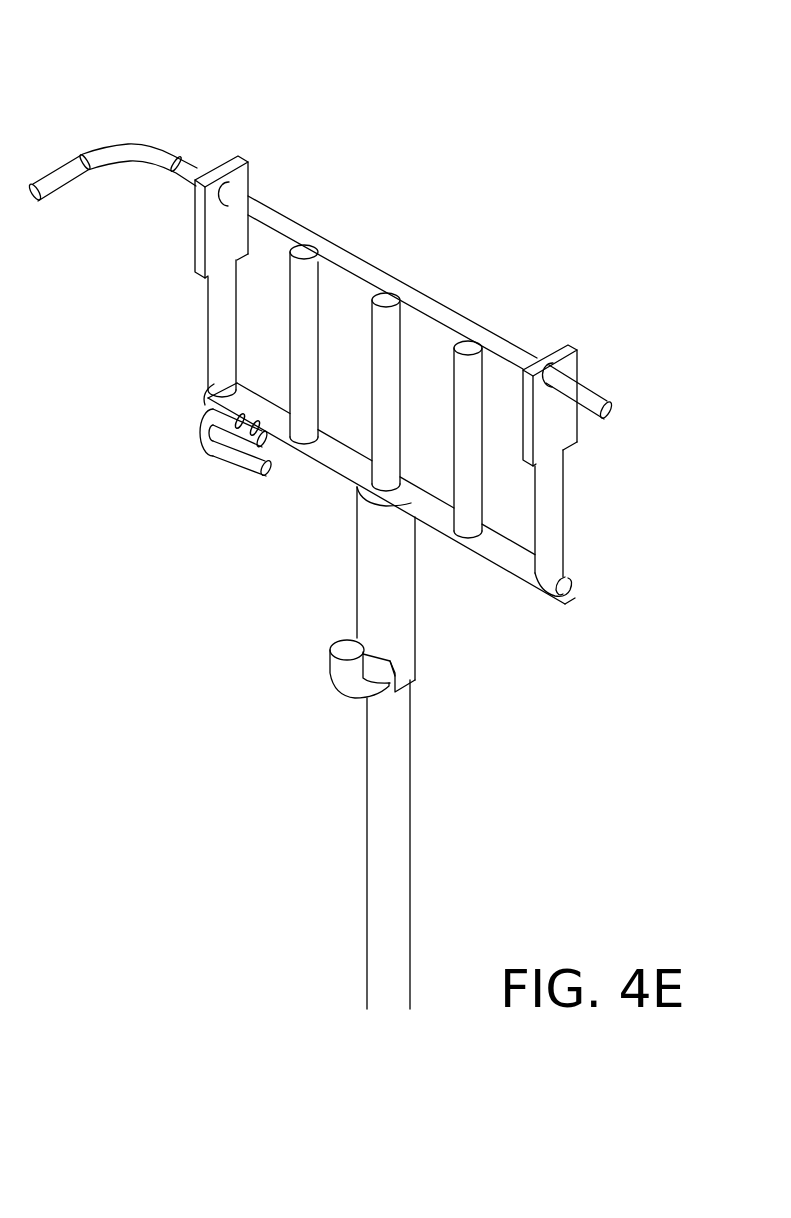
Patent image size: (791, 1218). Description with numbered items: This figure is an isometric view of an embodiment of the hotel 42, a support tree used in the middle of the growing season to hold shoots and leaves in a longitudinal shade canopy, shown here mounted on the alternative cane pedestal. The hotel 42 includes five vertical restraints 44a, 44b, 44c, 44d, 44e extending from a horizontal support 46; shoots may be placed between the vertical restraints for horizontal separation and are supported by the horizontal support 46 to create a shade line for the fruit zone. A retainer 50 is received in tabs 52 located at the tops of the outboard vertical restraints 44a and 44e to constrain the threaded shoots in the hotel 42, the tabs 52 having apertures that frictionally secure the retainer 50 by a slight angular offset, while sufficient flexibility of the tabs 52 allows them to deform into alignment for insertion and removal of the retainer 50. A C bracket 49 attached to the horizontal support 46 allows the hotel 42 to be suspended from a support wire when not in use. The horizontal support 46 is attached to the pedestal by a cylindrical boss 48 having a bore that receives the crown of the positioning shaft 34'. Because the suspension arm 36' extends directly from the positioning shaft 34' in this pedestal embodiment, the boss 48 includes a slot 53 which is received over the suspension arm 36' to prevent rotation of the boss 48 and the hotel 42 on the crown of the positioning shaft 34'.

The positioning shaft 34' is at (302, 844).
The suspension arm 36' is at (281, 682).
The hotel 42 is at (600, 297).
The vertical restraint 44a is at (222, 352).
The vertical restraint 44b is at (294, 252).
The vertical restraint 44c is at (386, 300).
The vertical restraint 44d is at (462, 348).
The vertical restraint 44e is at (547, 507).
The horizontal support 46 is at (507, 550).
The cylindrical boss 48 is at (382, 552).
The C bracket 49 is at (242, 465).
The retainer 50 is at (598, 405).
The tab 52 is at (228, 157).
The slot 53 is at (387, 662).